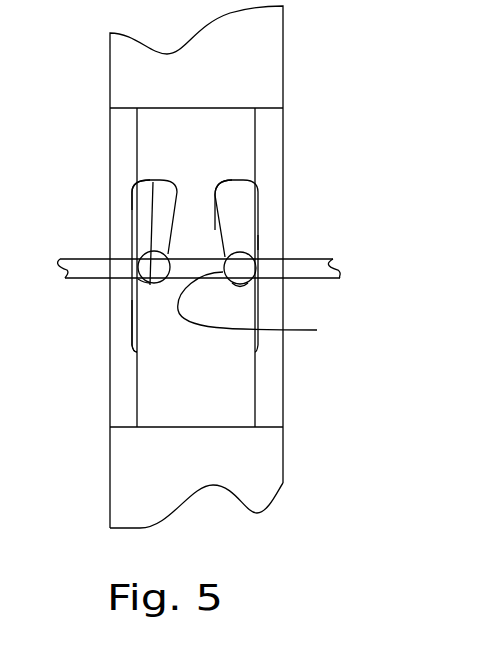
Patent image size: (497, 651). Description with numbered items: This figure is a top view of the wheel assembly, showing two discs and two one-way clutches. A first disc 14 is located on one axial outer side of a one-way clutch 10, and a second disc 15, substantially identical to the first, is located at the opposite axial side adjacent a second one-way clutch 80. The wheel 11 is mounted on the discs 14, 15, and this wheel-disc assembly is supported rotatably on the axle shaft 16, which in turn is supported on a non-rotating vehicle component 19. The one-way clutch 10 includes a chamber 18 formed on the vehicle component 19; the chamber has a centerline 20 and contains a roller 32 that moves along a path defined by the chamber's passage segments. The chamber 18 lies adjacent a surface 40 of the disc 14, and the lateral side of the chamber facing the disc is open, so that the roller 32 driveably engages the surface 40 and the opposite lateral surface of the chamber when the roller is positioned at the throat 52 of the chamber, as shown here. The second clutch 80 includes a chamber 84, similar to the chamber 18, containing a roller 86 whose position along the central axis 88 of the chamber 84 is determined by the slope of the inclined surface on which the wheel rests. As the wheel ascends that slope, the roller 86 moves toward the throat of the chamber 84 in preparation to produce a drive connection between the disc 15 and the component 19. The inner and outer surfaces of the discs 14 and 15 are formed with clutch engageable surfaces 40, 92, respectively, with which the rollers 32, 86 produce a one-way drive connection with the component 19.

The one-way clutch 10 is at (242, 292).
The wheel 11 is at (257, 498).
The first disc 14 is at (270, 362).
The second disc 15 is at (125, 358).
The axle shaft 16 is at (330, 262).
The chamber 18 is at (237, 190).
The vehicle component 19 is at (172, 167).
The centerline 20 is at (238, 227).
The roller 32 is at (247, 273).
The surface 40 is at (262, 240).
The throat 52 is at (263, 306).
The second one-way clutch 80 is at (153, 294).
The chamber 84 is at (148, 198).
The roller 86 is at (138, 279).
The central axis 88 is at (153, 227).
The clutch engageable surface 92 is at (127, 307).